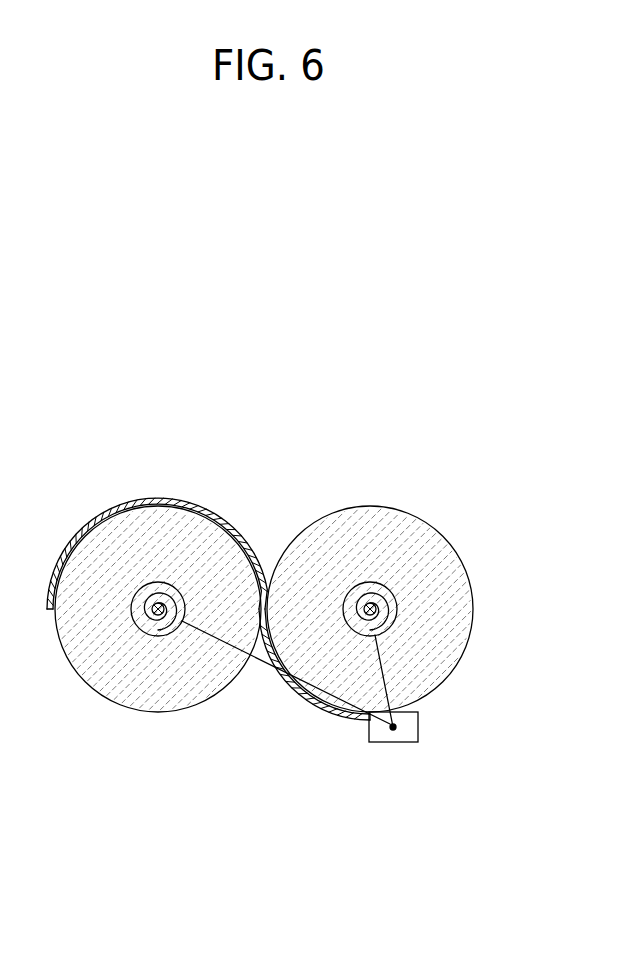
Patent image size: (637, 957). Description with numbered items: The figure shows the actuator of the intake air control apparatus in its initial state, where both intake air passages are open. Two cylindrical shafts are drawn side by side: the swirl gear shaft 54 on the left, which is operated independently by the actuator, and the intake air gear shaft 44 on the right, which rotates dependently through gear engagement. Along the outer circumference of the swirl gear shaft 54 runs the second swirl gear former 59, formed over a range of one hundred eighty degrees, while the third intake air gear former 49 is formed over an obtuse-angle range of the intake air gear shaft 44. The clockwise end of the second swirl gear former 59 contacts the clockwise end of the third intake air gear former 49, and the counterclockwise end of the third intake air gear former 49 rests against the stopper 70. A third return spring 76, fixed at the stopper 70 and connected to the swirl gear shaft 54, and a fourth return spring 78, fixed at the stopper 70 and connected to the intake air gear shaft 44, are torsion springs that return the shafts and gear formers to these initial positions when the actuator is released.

The intake air gear shaft 44 is at (370, 506).
The swirl gear shaft 54 is at (155, 712).
The second swirl gear former 59 is at (163, 498).
The third intake air gear former 49 is at (300, 700).
The third return spring 76 is at (262, 662).
The fourth return spring 78 is at (399, 719).
The stopper 70 is at (395, 743).